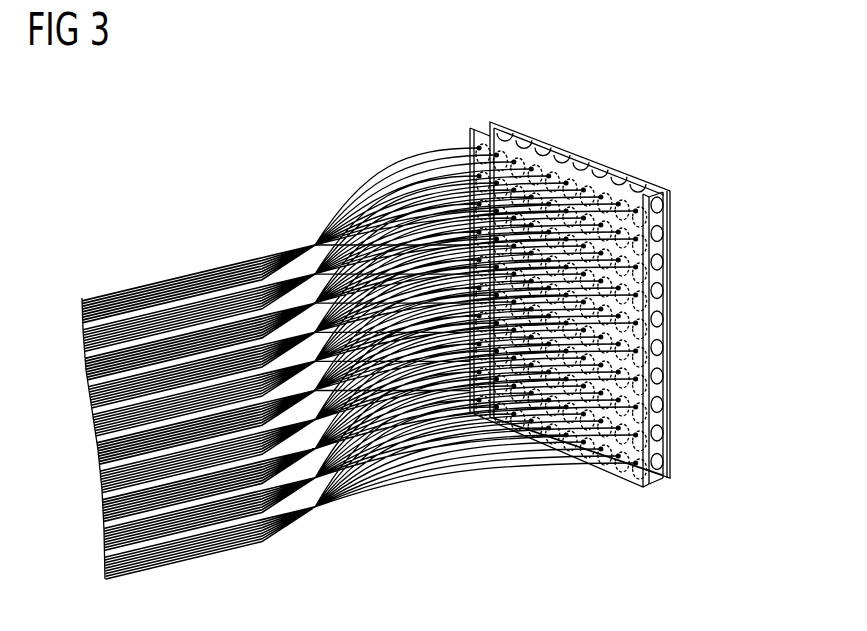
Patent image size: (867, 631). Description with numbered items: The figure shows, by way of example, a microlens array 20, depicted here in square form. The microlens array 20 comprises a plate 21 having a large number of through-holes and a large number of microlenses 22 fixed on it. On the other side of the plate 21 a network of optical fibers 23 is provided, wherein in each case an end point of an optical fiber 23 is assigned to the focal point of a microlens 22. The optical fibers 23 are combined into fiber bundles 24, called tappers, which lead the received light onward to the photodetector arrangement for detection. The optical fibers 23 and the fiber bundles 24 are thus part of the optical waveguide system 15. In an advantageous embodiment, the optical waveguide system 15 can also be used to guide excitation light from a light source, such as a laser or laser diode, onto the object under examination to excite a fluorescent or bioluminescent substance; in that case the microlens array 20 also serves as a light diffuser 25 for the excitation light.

The optical waveguide system 15 is at (317, 526).
The microlens array 20 is at (604, 150).
The plate 21 is at (470, 127).
The microlens 22 is at (660, 290).
The optical fiber 23 is at (420, 180).
The fiber bundle 24 is at (147, 301).
The light diffuser 25 is at (702, 228).